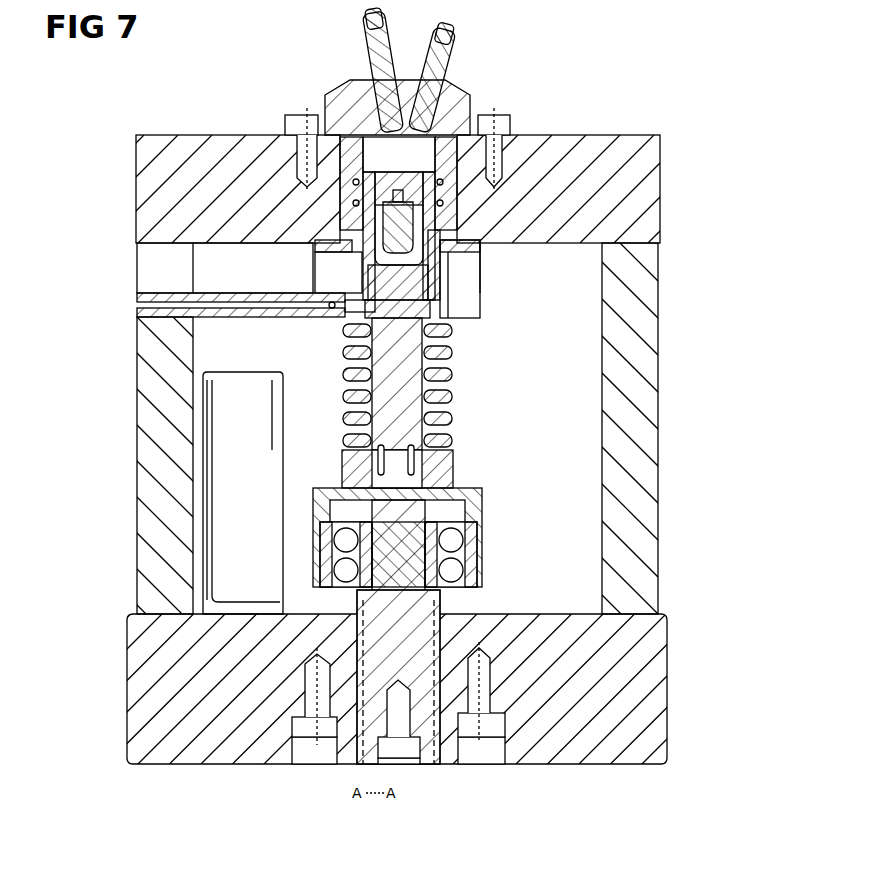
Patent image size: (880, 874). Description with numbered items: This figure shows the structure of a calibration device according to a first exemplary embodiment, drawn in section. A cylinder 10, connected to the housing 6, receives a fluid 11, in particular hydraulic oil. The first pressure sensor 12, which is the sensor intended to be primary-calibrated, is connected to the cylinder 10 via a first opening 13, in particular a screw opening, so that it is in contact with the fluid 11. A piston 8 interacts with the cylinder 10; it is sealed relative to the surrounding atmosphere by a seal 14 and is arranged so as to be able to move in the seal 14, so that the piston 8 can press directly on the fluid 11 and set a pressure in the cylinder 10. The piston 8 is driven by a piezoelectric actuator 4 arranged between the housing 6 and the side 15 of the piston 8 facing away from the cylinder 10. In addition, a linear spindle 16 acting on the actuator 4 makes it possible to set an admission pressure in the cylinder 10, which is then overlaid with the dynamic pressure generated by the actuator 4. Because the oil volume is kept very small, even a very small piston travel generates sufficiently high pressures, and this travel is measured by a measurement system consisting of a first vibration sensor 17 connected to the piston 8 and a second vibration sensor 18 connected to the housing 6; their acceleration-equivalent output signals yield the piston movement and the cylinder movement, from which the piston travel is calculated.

The piezoelectric actuator 4 is at (453, 362).
The housing 6 is at (632, 470).
The piston 8 is at (465, 198).
The cylinder 10 is at (320, 128).
The fluid 11 is at (475, 125).
The first pressure sensor 12 is at (370, 60).
The first opening 13 is at (365, 98).
The seal 14 is at (352, 232).
The side of the piston facing away from the cylinder 15 is at (480, 316).
The linear spindle 16 is at (455, 740).
The first vibration sensor 17 is at (345, 238).
The second vibration sensor 18 is at (440, 70).